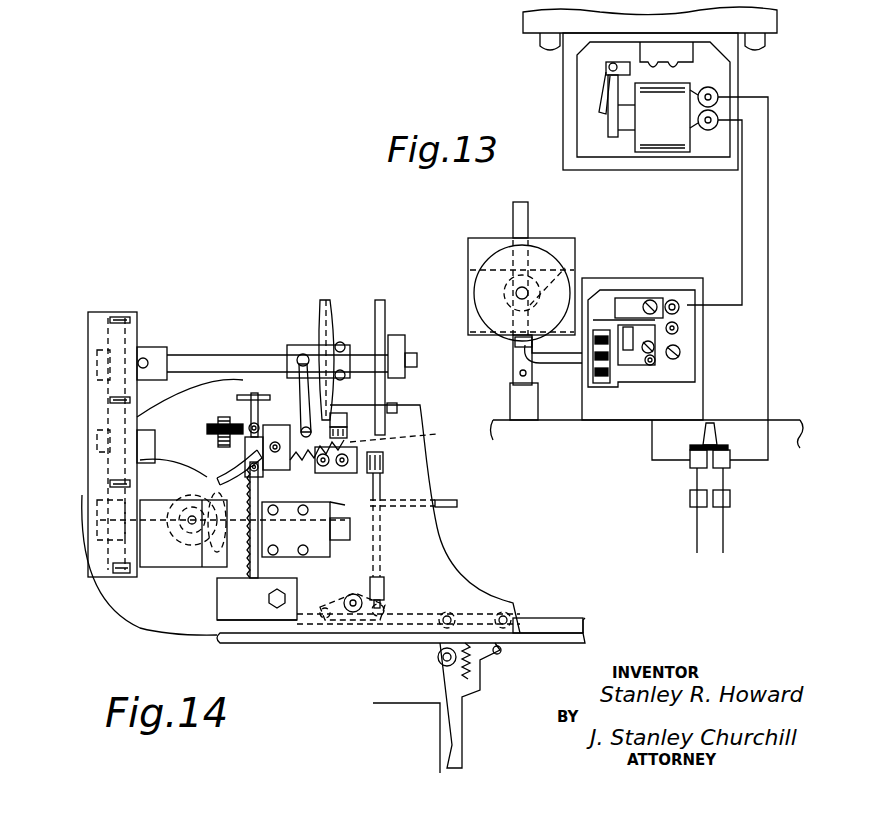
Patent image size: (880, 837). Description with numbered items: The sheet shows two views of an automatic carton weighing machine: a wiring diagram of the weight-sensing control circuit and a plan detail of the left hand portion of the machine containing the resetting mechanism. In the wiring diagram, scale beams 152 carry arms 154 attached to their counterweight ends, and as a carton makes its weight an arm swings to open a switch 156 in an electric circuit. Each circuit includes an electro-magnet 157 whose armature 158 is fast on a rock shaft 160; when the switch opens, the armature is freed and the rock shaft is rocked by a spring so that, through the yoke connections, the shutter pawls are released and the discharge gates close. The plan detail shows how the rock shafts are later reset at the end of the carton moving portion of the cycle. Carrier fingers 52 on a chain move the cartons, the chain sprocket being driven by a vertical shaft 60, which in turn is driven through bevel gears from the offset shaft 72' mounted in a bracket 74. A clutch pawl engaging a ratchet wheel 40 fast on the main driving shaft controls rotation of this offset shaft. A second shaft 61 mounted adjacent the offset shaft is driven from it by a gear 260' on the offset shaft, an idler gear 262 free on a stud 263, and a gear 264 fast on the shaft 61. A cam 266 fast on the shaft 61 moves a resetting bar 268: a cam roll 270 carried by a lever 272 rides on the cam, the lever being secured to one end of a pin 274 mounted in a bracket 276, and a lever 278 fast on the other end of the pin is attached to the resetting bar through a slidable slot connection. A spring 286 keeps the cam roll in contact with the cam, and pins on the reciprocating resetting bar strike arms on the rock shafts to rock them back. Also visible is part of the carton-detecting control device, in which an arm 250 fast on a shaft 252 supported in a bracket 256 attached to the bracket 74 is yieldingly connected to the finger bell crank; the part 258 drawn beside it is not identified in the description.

In FIG. 13, the scale beam 152 is at (574, 278).
In FIG. 13, the arm 154 is at (566, 366).
In FIG. 13, the switch 156 is at (625, 323).
In FIG. 13, the electro-magnet 157 is at (642, 148).
In FIG. 13, the armature 158 is at (616, 128).
In FIG. 13, the rock shaft 160 is at (609, 68).
In FIG. 14, the ratchet wheel 40 is at (259, 566).
In FIG. 14, the carrier finger 52 is at (458, 720).
In FIG. 14, the vertical shaft 60 is at (180, 545).
In FIG. 14, the shaft 61 is at (208, 356).
In FIG. 14, the shaft 72' is at (149, 565).
In FIG. 14, the bracket 74 is at (168, 558).
In FIG. 14, the arm 250 is at (306, 529).
In FIG. 14, the shaft 252 is at (246, 402).
In FIG. 14, the bracket 256 is at (212, 478).
In FIG. 14, the arm 258 is at (218, 470).
In FIG. 14, the gear 260' is at (189, 544).
In FIG. 14, the idler gear 262 is at (110, 472).
In FIG. 14, the stud 263 is at (98, 447).
In FIG. 14, the gear 264 is at (108, 392).
In FIG. 14, the cam 266 is at (330, 300).
In FIG. 14, the resetting bar 268 is at (403, 497).
In FIG. 14, the cam roll 270 is at (348, 418).
In FIG. 14, the lever 272 is at (350, 432).
In FIG. 14, the pin 274 is at (437, 435).
In FIG. 14, the bracket 276 is at (384, 464).
In FIG. 14, the lever 278 is at (372, 492).
In FIG. 14, the spring 286 is at (300, 410).